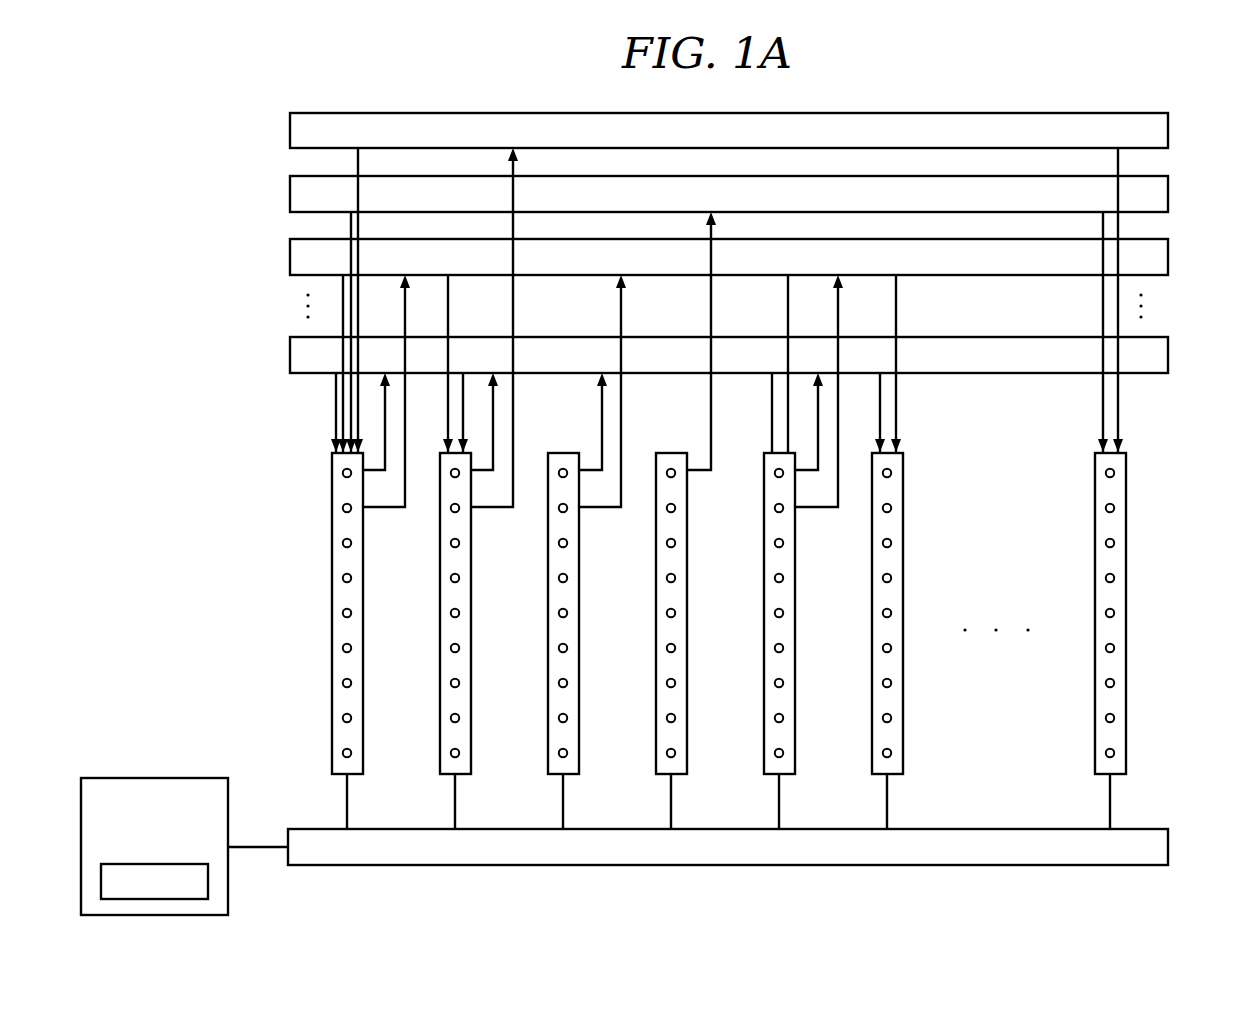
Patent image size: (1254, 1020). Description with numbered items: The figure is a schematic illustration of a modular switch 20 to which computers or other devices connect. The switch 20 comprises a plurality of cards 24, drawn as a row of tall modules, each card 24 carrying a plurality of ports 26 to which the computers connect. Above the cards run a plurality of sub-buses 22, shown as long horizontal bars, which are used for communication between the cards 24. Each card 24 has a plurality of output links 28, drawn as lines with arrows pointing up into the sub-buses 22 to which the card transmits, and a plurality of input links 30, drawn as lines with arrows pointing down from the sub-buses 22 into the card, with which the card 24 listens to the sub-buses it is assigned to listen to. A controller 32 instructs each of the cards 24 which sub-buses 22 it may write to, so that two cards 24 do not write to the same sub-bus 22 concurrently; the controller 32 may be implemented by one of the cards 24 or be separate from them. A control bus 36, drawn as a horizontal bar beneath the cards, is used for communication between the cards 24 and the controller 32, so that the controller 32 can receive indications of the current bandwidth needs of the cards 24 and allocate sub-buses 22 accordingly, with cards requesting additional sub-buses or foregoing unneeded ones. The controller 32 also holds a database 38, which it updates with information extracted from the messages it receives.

The modular switch 20 is at (155, 115).
The sub-bus 22 is at (290, 122).
The card 24 is at (363, 731).
The port 26 is at (343, 508).
The output link 28 is at (367, 473).
The input link 30 is at (358, 410).
The controller 32 is at (152, 778).
The control bus 36 is at (1168, 851).
The database 38 is at (134, 864).